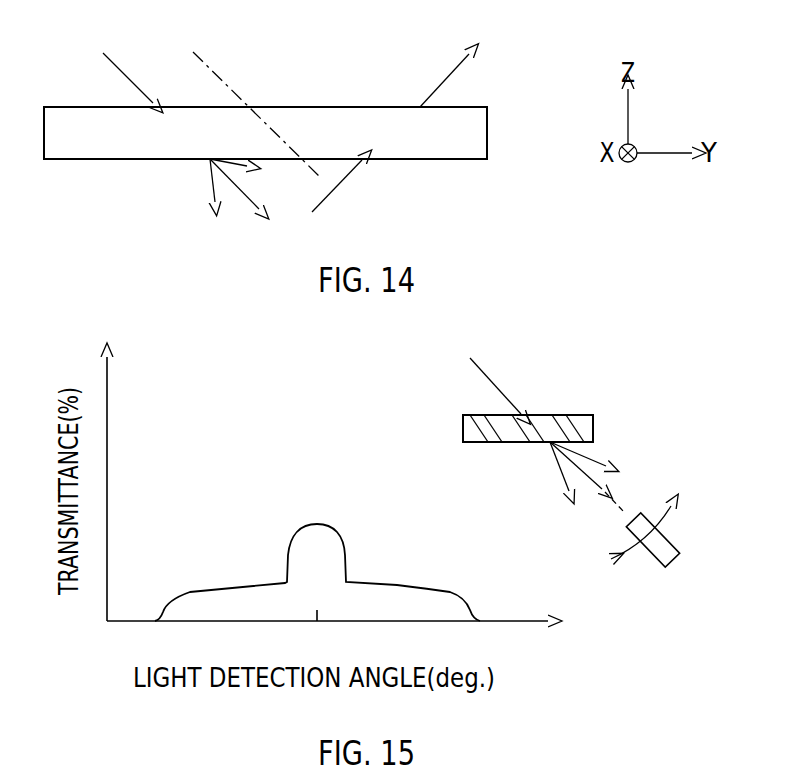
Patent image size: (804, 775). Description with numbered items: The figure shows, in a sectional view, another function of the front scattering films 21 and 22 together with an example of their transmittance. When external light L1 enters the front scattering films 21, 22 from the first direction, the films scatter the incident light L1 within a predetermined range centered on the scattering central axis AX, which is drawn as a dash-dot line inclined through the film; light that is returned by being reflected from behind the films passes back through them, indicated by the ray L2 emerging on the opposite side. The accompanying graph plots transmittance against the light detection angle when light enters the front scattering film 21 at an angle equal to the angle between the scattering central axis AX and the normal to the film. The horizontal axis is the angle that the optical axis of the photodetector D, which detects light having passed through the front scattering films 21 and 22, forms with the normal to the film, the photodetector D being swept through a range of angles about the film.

In FIG. 14, the front scattering film 21 is at (499, 77).
In FIG. 15, the front scattering film 21 is at (610, 428).
In FIG. 14, the front scattering film 22 is at (307, 87).
In FIG. 14, the external light L1 is at (128, 74).
In FIG. 14, the transmitted light L2 is at (337, 191).
In FIG. 14, the scattering central axis AX is at (228, 80).
In FIG. 15, the photodetector D is at (663, 552).